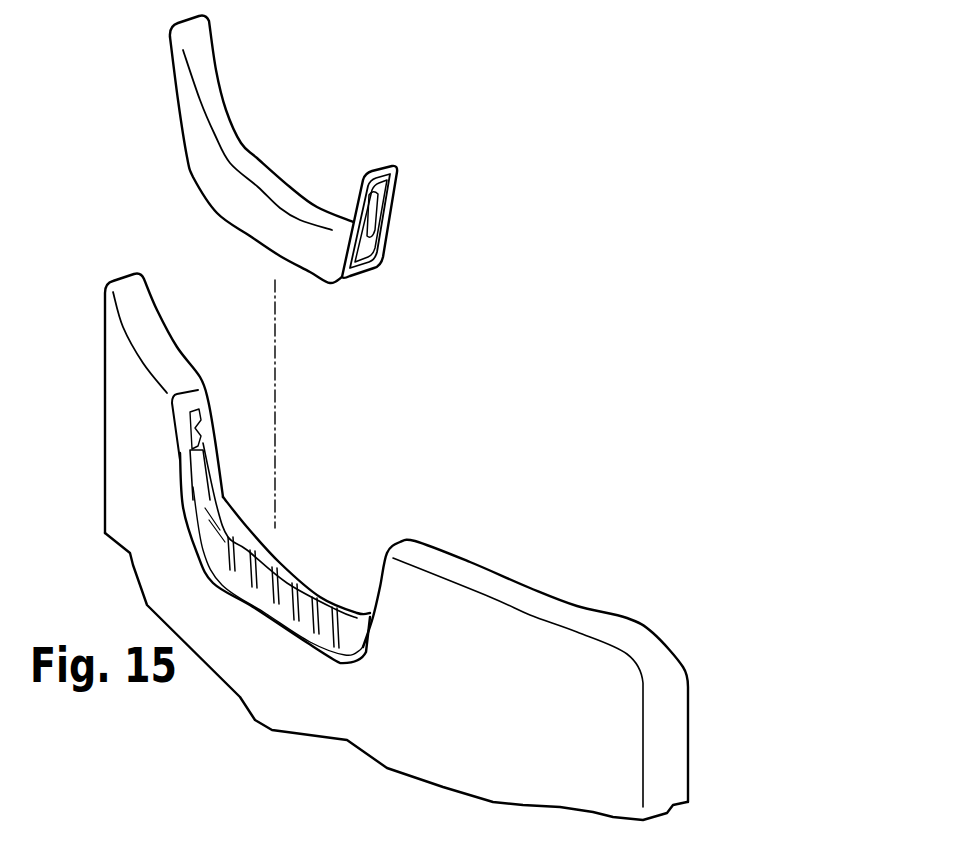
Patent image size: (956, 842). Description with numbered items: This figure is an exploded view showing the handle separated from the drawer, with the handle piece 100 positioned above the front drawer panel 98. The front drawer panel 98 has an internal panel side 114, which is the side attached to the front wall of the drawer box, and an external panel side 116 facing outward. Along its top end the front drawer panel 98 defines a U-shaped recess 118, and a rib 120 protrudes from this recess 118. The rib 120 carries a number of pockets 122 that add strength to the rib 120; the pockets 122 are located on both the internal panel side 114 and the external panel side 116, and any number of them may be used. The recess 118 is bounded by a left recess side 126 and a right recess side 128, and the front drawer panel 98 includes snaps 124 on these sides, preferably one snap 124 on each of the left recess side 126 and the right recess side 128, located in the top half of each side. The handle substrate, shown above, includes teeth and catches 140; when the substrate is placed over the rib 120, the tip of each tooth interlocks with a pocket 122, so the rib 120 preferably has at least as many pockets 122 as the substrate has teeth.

The front drawer panel 98 is at (716, 683).
The handle member 100 is at (267, 160).
The internal panel side 114 is at (220, 460).
The external panel side 116 is at (118, 453).
The U-shaped recess 118 is at (177, 457).
The rib 120 is at (283, 563).
The pockets 122 is at (245, 575).
The snaps 124 is at (196, 432).
The left recess side 126 is at (197, 430).
The right recess side 128 is at (385, 552).
The catches 140 is at (372, 195).